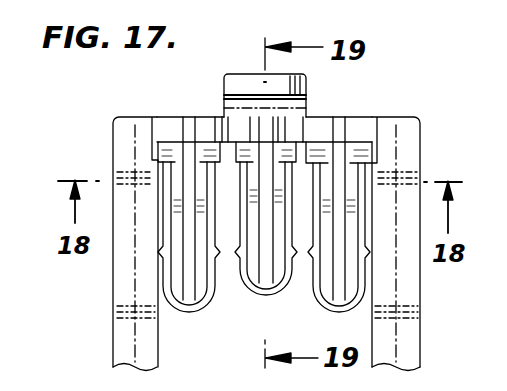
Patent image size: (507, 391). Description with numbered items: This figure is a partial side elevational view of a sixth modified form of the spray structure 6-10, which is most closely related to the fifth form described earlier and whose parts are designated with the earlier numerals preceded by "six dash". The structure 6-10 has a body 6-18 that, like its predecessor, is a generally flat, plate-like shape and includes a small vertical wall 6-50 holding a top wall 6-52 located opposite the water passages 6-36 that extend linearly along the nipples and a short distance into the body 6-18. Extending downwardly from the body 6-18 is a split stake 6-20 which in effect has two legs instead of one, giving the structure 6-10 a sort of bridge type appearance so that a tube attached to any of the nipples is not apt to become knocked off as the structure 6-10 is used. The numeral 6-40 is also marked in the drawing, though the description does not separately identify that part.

The spray structure 6-10 is at (102, 256).
The body 6-18 is at (348, 113).
The split stake 6-20 is at (112, 341).
The water passages 6-36 is at (345, 281).
The contact element 6-40 is at (243, 384).
The vertical wall 6-50 is at (232, 104).
The top wall 6-52 is at (232, 81).